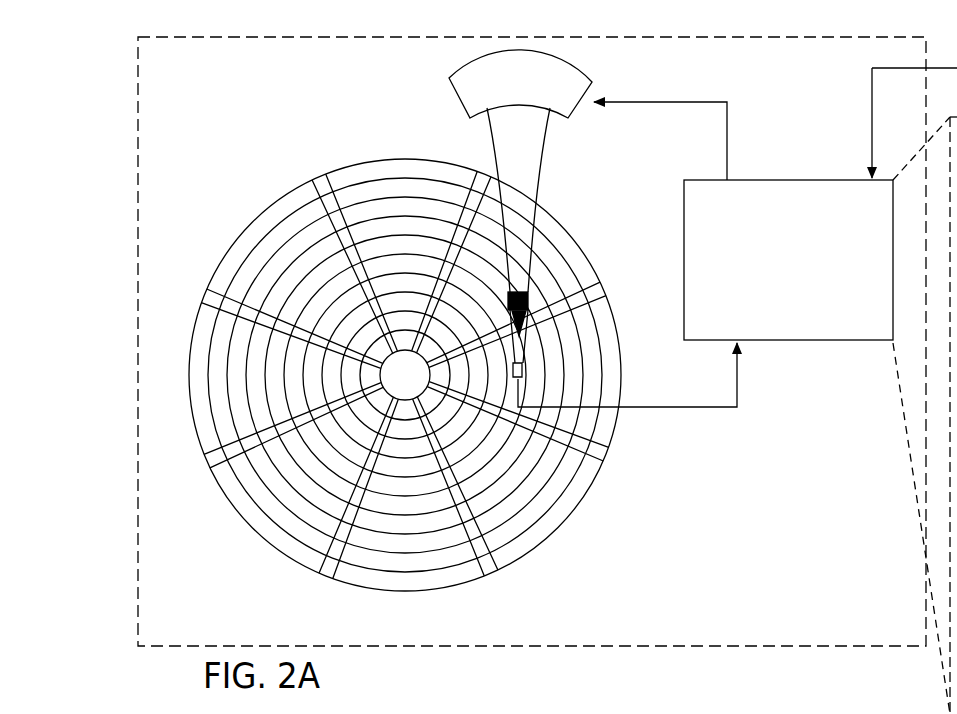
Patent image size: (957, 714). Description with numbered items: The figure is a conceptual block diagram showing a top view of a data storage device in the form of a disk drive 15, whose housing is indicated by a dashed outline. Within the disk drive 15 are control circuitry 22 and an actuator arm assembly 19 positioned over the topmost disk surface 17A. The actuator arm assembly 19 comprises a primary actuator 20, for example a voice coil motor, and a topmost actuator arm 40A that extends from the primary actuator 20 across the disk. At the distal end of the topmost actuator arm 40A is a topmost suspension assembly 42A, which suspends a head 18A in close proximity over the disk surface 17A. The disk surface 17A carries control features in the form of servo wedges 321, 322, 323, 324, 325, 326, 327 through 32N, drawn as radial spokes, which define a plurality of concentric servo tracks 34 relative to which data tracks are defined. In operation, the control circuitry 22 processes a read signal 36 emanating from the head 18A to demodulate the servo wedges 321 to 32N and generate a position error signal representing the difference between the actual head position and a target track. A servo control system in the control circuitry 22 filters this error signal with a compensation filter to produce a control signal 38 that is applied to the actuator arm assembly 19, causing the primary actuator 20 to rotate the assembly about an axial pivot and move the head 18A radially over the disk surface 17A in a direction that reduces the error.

The disk drive 15 is at (856, 652).
The topmost disk surface 17A is at (412, 369).
The head 18A is at (528, 381).
The actuator arm assembly 19 is at (534, 382).
The primary actuator 20 is at (582, 112).
The control circuitry 22 is at (788, 204).
The servo wedge 321 is at (321, 180).
The servo wedge 322 is at (204, 295).
The servo wedge 323 is at (207, 461).
The servo wedge 324 is at (327, 578).
The servo wedge 325 is at (491, 577).
The servo wedge 326 is at (606, 452).
The servo wedge 327 is at (603, 291).
The servo wedge 32N is at (481, 176).
The servo tracks 34 is at (413, 185).
The read signal 36 is at (737, 408).
The control signal 38 is at (728, 124).
The topmost actuator arm 40A is at (538, 184).
The topmost suspension assembly 42A is at (565, 713).